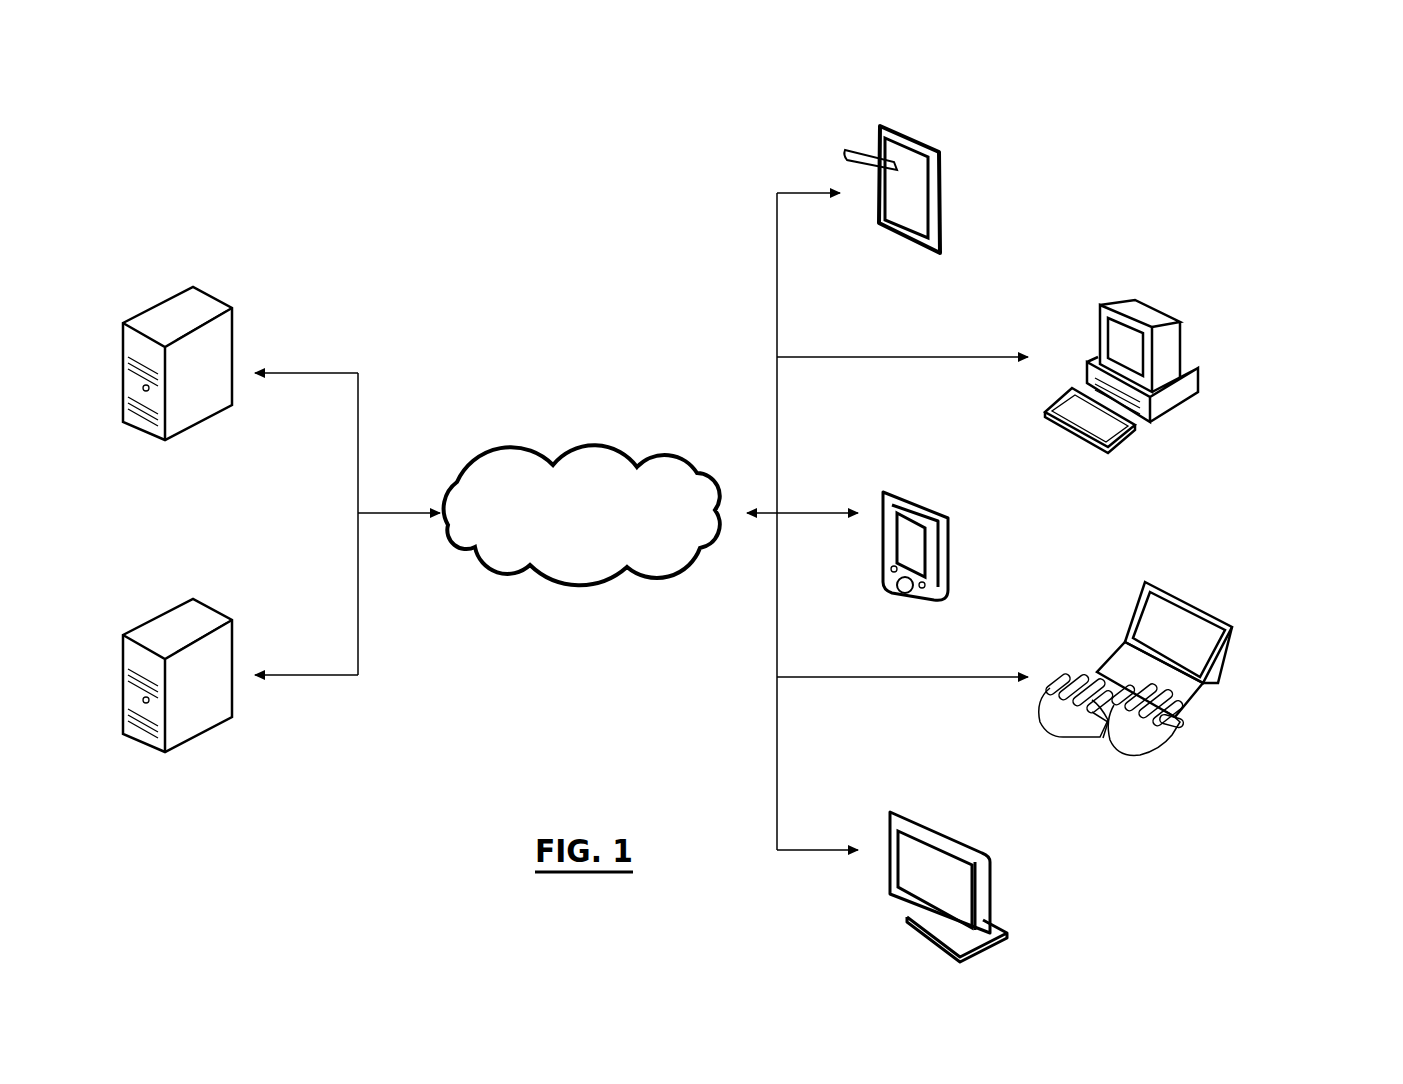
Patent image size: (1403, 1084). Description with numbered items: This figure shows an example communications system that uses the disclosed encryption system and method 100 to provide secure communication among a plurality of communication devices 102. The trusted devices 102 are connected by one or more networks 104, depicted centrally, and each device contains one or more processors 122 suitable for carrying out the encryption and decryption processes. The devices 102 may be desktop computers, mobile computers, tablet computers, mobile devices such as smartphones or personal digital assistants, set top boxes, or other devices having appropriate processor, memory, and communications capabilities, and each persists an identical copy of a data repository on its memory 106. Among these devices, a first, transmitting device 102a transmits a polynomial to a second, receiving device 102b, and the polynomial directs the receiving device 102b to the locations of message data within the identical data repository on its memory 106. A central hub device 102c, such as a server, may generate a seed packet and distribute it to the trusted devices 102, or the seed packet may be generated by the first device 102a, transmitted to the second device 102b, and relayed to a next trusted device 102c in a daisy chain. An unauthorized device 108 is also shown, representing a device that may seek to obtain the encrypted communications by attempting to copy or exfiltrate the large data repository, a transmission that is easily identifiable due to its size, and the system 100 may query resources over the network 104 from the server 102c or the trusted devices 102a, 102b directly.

The encryption system and method 100 is at (575, 943).
The communication devices 102 is at (907, 178).
The first transmitting device 102a is at (190, 600).
The second receiving device 102b is at (940, 888).
The central hub device 102c is at (214, 368).
The network 104 is at (602, 561).
The memory 106 is at (203, 290).
The unauthorized device 108 is at (1175, 638).
The processors 122 is at (167, 287).